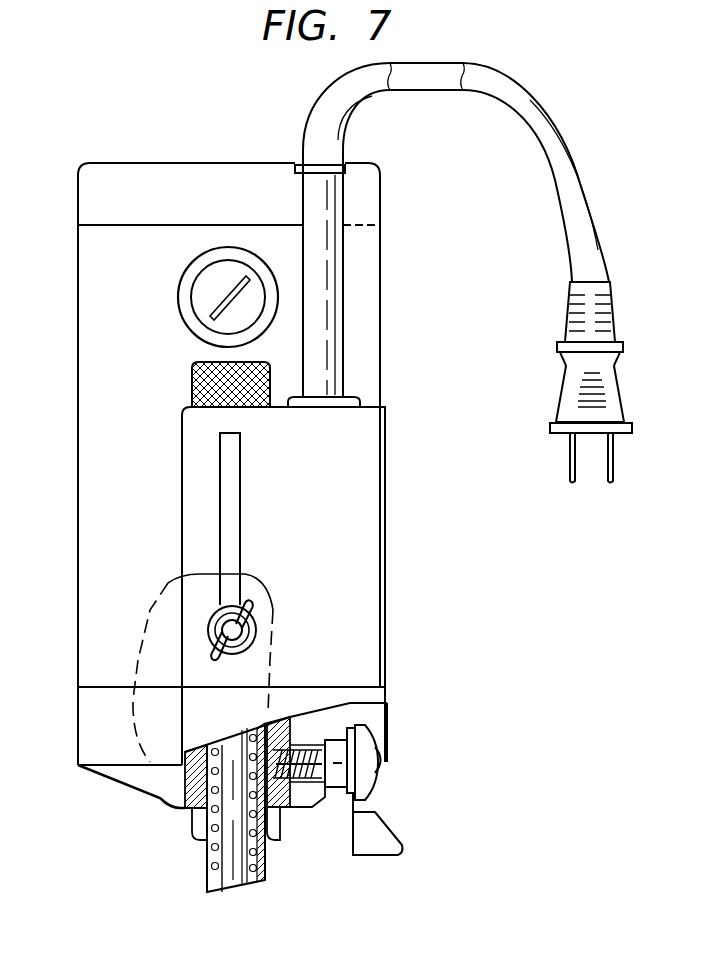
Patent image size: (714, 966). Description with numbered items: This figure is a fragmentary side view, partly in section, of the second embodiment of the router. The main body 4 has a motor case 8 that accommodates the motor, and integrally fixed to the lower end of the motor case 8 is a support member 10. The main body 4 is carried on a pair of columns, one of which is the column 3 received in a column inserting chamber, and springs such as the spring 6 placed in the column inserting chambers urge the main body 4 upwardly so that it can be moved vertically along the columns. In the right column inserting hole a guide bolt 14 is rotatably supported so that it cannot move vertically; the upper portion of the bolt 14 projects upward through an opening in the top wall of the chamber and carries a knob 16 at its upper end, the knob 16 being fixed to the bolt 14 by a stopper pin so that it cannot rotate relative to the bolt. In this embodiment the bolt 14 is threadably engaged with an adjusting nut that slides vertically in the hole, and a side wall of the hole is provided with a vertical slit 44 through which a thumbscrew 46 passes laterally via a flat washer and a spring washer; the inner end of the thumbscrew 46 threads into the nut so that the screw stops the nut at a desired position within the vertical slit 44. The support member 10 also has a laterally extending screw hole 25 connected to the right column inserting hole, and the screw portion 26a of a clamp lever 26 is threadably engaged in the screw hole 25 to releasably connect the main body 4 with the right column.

The main body 4 is at (74, 330).
The motor case 8 is at (85, 392).
The knob 16 is at (192, 386).
The vertical slit 44 is at (245, 493).
The thumbscrew 46 is at (237, 630).
The support member 10 is at (195, 785).
The spring 6 is at (207, 825).
The column 3 is at (210, 832).
The guide bolt 14 is at (227, 882).
The screw hole 25 is at (298, 750).
The clamp lever 26 is at (387, 842).
The screw portion 26a is at (308, 778).